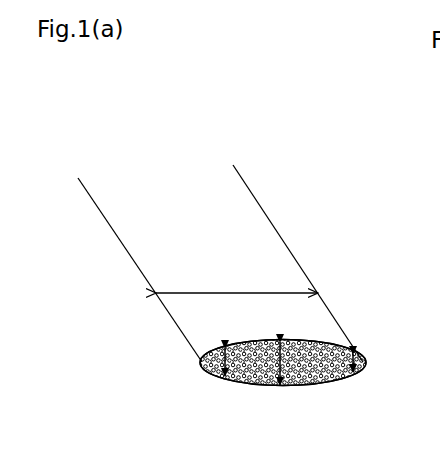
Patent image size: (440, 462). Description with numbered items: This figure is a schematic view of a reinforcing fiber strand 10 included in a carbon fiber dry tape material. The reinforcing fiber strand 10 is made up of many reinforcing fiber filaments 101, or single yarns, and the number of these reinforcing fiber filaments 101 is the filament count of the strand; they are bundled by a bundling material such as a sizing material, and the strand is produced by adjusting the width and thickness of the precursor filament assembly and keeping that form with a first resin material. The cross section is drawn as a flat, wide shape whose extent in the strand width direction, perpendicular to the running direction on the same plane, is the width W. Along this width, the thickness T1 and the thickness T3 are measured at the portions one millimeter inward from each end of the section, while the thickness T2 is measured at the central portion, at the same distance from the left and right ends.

The reinforcing fiber strand 10 is at (98, 168).
The reinforcing fiber filament 101 is at (303, 341).
The strand width W is at (237, 270).
The thickness of the end of the strand T1 is at (206, 385).
The thickness of the central portion of the strand T2 is at (272, 387).
The thickness of the end of the strand T3 is at (349, 386).